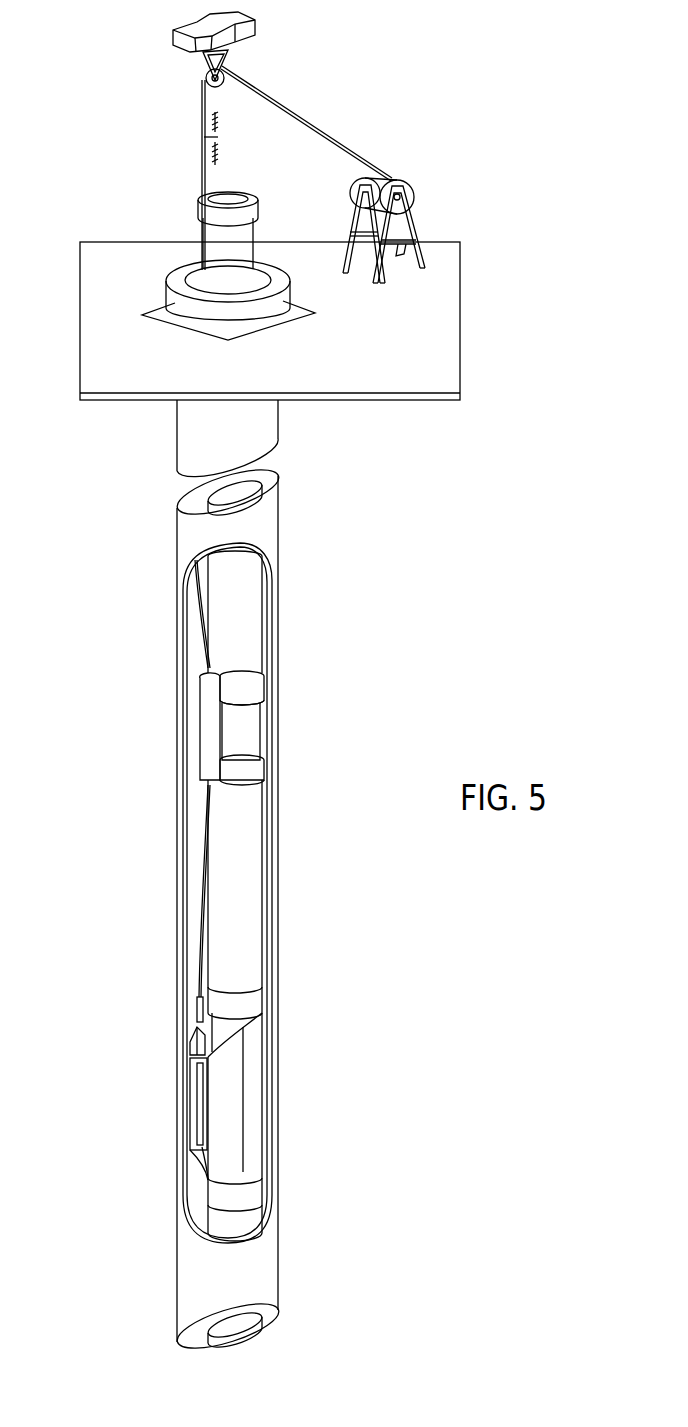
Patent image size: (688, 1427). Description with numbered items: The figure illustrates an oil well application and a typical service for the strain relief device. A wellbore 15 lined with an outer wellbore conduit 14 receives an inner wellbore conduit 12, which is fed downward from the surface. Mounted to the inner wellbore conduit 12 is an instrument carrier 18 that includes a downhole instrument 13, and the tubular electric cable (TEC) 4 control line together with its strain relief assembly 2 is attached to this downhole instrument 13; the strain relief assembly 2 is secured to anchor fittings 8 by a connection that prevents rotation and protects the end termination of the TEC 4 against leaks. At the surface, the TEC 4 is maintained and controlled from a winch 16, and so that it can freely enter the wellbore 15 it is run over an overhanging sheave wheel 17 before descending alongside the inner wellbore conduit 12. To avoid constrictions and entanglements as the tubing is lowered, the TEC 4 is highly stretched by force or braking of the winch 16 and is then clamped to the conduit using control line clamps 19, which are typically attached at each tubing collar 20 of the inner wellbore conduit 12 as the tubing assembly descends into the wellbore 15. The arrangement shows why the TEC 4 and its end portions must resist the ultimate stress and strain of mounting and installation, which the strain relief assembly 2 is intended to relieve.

The strain relief assembly 2 is at (193, 1002).
The tubular electric cable 4 is at (203, 152).
The anchor fittings 8 is at (192, 1043).
The inner wellbore conduit 12 is at (243, 652).
The downhole instrument 13 is at (202, 1108).
The outer wellbore conduit 14 is at (272, 522).
The wellbore 15 is at (187, 297).
The winch 16 is at (400, 180).
The overhanging sheave wheel 17 is at (205, 83).
The instrument carrier 18 is at (227, 1105).
The control line clamps 19 is at (207, 692).
The tubing collar 20 is at (247, 735).